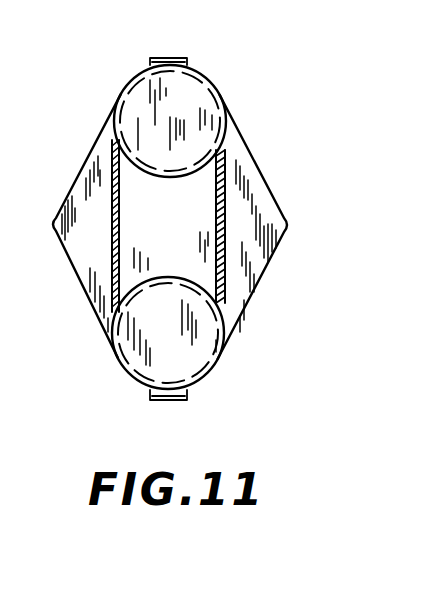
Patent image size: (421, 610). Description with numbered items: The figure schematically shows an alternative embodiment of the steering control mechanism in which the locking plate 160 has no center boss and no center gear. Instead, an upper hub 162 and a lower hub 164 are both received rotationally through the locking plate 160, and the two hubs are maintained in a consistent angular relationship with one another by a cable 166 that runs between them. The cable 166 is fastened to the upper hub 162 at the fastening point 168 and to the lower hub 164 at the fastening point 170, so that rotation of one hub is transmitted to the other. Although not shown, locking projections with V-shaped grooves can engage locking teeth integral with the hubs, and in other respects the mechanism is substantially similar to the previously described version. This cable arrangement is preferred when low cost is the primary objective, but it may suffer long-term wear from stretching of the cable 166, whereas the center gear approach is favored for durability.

The locking plate 160 is at (262, 197).
The upper hub 162 is at (198, 95).
The lower hub 164 is at (187, 368).
The cable 166 is at (215, 225).
The fastening point on upper hub 168 is at (163, 56).
The fastening point on lower hub 170 is at (167, 399).